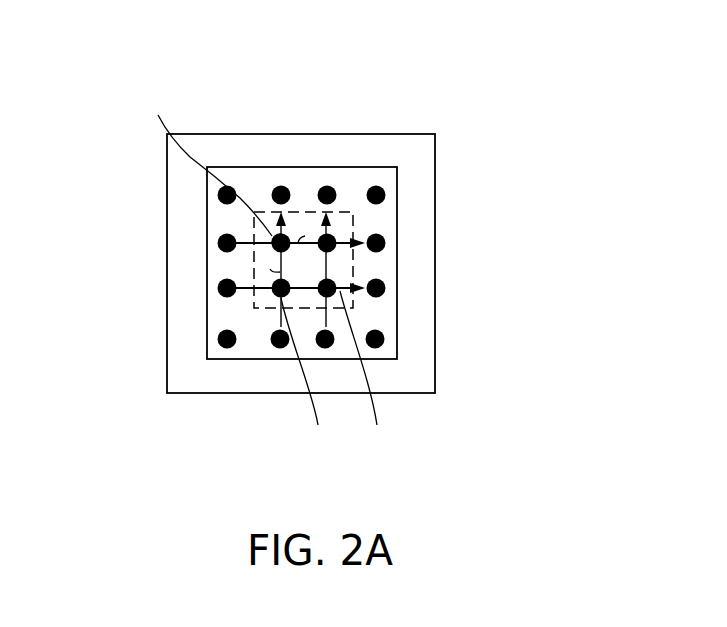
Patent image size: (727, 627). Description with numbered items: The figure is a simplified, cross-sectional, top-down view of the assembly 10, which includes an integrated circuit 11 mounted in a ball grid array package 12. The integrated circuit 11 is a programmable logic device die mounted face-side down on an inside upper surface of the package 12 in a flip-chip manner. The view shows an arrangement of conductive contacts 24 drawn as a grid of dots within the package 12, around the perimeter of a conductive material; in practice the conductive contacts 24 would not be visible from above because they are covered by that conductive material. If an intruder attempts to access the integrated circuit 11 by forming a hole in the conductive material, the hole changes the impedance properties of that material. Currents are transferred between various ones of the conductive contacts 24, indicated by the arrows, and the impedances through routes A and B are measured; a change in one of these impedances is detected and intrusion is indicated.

The assembly 10 is at (464, 41).
The integrated circuit 11 is at (254, 275).
The package 12 is at (197, 393).
The conductive contacts 24 is at (375, 186).